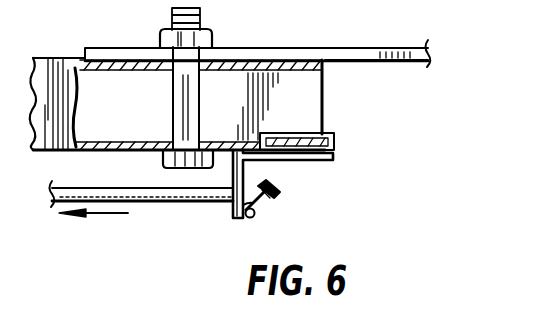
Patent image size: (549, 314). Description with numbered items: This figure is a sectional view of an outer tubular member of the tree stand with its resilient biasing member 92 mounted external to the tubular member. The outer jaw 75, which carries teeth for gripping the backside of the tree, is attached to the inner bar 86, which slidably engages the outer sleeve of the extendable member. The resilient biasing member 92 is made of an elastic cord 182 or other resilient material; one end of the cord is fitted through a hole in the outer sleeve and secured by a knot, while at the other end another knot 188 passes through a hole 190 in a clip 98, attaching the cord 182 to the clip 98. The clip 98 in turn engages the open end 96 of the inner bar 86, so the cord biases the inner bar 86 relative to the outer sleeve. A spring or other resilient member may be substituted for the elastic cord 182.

The outer jaw 75 is at (355, 47).
The inner bar 86 is at (140, 114).
The end of inner bar 96 is at (323, 113).
The clip 98 is at (333, 150).
The elastic cord 182 is at (99, 188).
The knot 188 is at (271, 175).
The hole in clip 190 is at (222, 218).
The resilient biasing member 92 is at (217, 212).